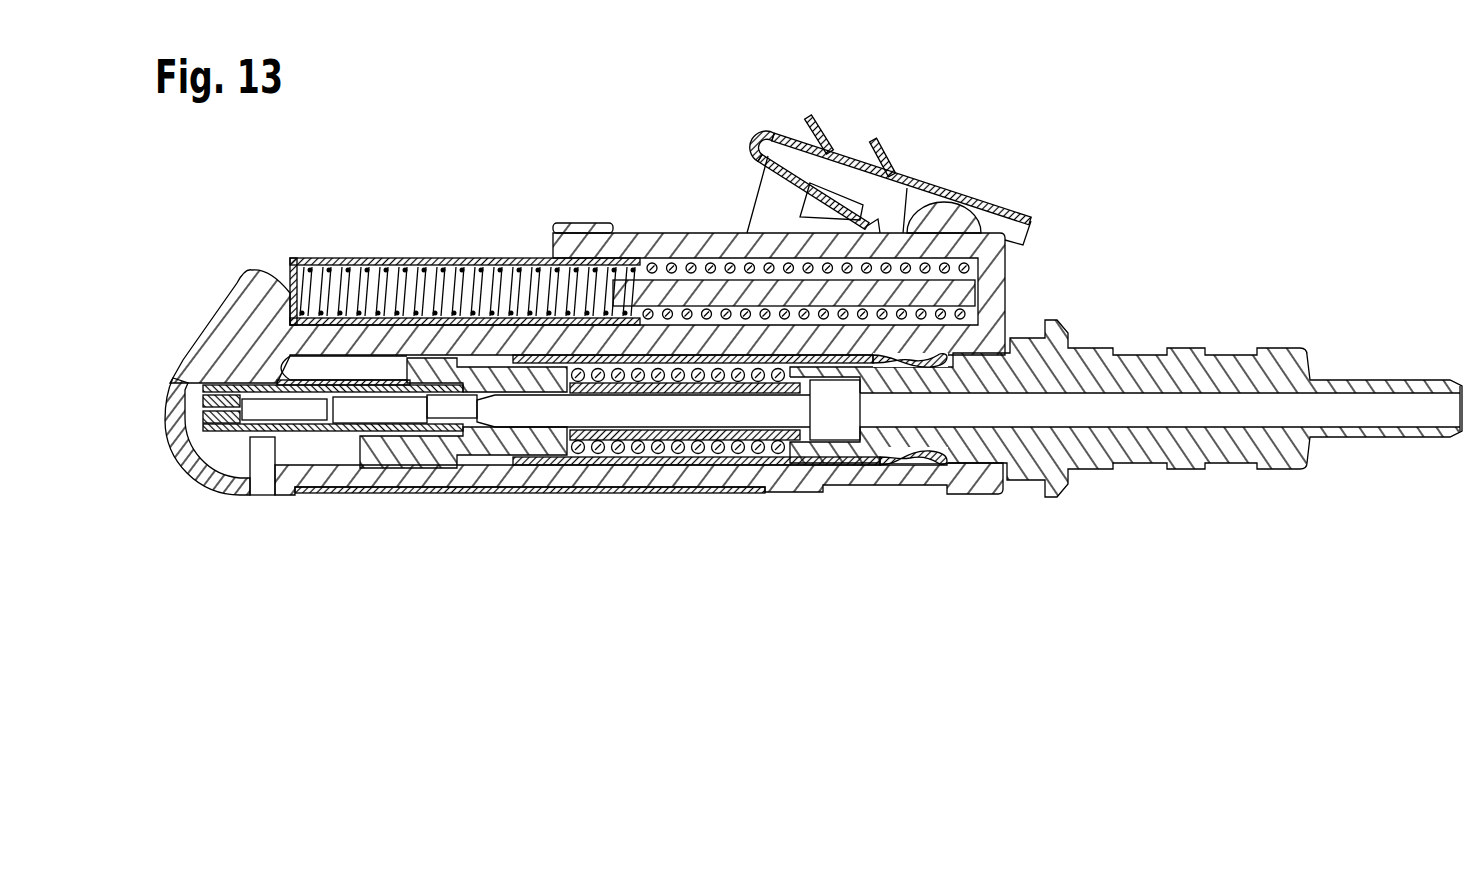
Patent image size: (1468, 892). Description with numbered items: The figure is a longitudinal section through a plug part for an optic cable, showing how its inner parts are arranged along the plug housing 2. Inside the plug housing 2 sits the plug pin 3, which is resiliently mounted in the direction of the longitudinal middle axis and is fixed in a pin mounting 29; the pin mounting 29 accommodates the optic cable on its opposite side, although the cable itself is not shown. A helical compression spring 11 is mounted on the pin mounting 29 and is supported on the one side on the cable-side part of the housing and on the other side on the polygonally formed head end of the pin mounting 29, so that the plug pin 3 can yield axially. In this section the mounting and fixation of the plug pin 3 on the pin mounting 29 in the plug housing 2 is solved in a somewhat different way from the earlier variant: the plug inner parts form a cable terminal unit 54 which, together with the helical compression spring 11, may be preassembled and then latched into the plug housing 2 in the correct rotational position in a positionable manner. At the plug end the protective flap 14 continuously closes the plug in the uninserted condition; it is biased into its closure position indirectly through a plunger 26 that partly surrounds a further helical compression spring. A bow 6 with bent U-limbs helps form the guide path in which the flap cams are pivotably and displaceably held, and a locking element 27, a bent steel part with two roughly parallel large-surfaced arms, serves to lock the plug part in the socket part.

The protective flap 14 is at (238, 328).
The plunger 26 is at (478, 258).
The locking element 27 is at (777, 132).
The plug pin 3 is at (262, 430).
The pin mounting 29 is at (496, 440).
The helical compression spring 11 is at (610, 443).
The bow 6 is at (718, 492).
The plug housing 2 is at (963, 478).
The cable terminal unit 54 is at (1102, 452).